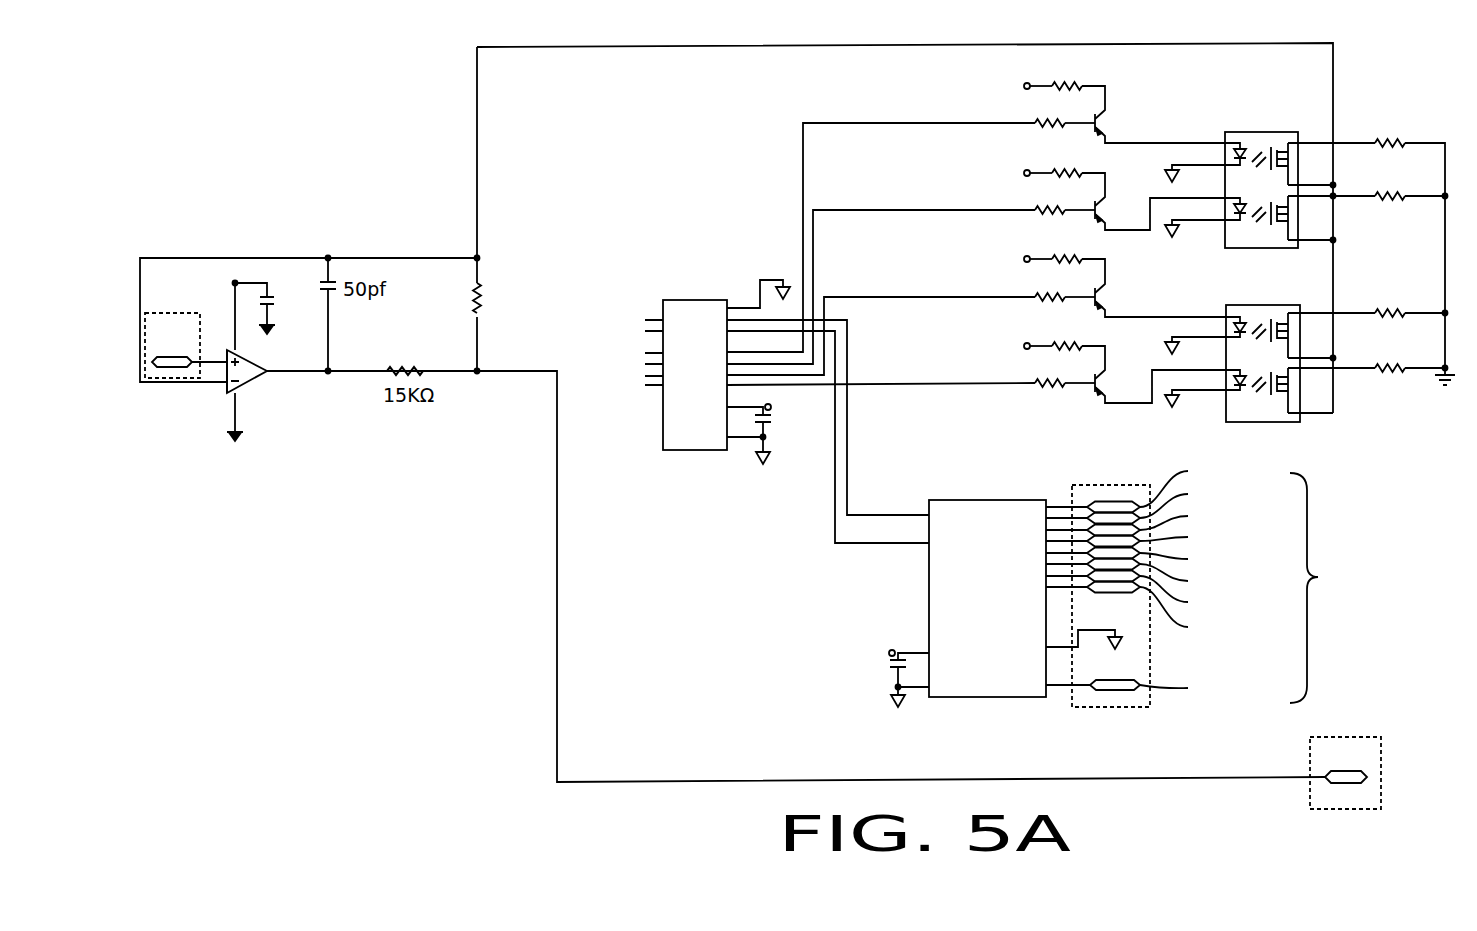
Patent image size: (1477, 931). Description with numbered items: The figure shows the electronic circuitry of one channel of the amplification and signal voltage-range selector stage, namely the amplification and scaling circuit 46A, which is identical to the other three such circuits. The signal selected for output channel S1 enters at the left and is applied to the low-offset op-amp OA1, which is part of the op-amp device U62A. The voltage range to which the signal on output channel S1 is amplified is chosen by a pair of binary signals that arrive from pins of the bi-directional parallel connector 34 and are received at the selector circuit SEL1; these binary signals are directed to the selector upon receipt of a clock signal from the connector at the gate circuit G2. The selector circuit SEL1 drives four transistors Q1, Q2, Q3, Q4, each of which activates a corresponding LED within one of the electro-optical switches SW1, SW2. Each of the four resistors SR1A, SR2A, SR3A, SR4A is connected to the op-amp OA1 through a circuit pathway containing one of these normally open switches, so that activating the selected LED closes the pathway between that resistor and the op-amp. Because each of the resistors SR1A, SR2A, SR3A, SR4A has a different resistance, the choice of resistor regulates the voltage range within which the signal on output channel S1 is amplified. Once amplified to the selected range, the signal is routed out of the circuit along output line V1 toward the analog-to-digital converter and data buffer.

The amplification and scaling circuit 46A is at (489, 584).
The bi-directional parallel connector 34 is at (1246, 580).
The output channel S1 is at (150, 183).
The low-offset op-amp OA1 is at (282, 294).
The op amp IC U62A is at (196, 386).
The selector circuit SEL1 is at (770, 425).
The transistor Q1 is at (1094, 100).
The transistor Q2 is at (1094, 187).
The transistor Q3 is at (1094, 274).
The transistor Q4 is at (1094, 360).
The electro-optical switch SW1 is at (1270, 189).
The electro-optical switch SW2 is at (1270, 363).
The resistor SR1A is at (1403, 151).
The resistor SR2A is at (1394, 241).
The resistor SR3A is at (1394, 323).
The resistor SR4A is at (1406, 378).
The gate circuit G2 is at (956, 589).
The output line V1 is at (1315, 842).